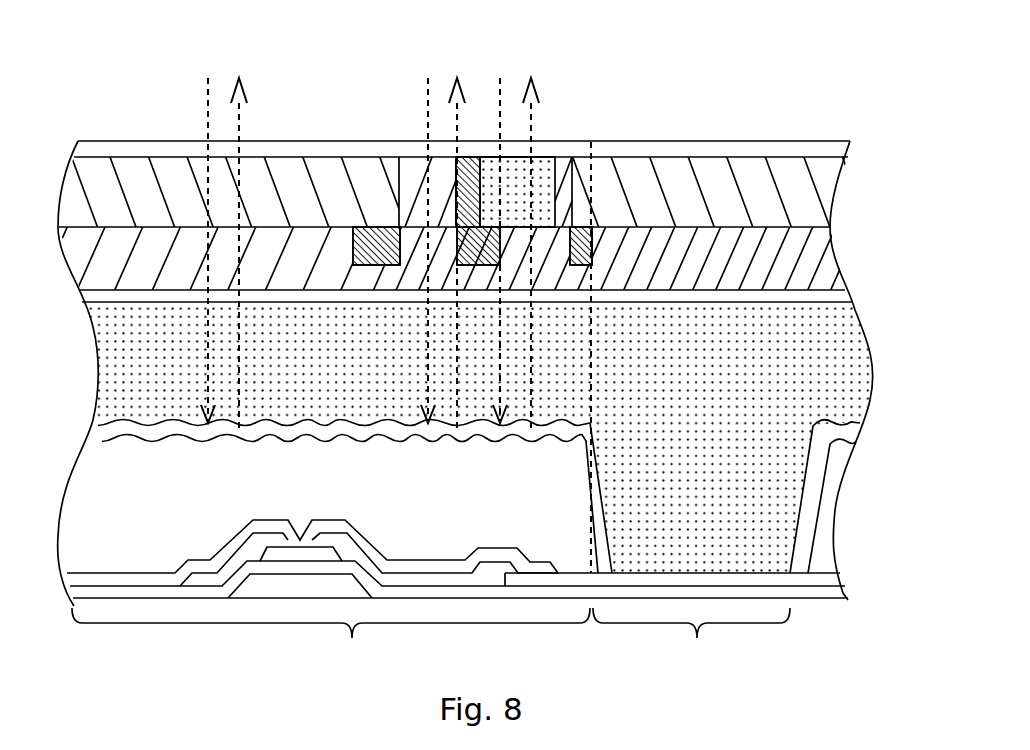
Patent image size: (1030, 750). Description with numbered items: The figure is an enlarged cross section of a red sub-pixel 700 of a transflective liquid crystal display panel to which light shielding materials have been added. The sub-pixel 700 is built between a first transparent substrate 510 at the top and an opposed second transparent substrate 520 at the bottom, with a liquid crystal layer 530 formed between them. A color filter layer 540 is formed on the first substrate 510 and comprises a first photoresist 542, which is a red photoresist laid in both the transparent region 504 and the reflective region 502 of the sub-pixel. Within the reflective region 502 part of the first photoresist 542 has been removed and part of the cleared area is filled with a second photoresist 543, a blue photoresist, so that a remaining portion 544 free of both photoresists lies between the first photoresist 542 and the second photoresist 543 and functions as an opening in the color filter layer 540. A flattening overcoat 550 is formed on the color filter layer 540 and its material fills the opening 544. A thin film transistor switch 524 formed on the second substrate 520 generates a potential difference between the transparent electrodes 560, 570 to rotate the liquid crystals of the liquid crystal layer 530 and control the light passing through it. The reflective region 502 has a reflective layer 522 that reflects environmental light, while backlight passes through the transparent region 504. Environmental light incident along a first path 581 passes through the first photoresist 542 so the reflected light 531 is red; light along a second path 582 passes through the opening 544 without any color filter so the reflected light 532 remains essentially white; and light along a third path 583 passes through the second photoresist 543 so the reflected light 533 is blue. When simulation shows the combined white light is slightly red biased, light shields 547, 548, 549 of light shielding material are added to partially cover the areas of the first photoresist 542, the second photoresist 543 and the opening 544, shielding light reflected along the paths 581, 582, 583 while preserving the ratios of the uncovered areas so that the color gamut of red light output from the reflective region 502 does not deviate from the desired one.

The red sub-pixel 700 is at (787, 80).
The first transparent substrate 510 is at (90, 150).
The color filter layer 540 is at (483, 171).
The first photoresist 542 is at (282, 162).
The remaining portion (opening) 544 is at (400, 163).
The second photoresist 543 is at (546, 156).
The light shield 548 is at (476, 162).
The light shield 547 is at (380, 226).
The light shield 549 is at (591, 228).
The flattening overcoat 550 is at (826, 262).
The transparent electrode 560 is at (845, 296).
The liquid crystal layer 530 is at (108, 362).
The reflective layer 522 is at (98, 429).
The thin film transistor switch 524 is at (247, 508).
The second transparent substrate 520 is at (82, 590).
The transparent electrode 570 is at (840, 578).
The first path 581 is at (200, 103).
The second path 582 is at (420, 70).
The third path 583 is at (550, 108).
The reflected light 531 is at (248, 428).
The reflected light 532 is at (466, 428).
The reflected light 533 is at (533, 428).
The reflective region 502 is at (331, 637).
The transparent region 504 is at (691, 637).